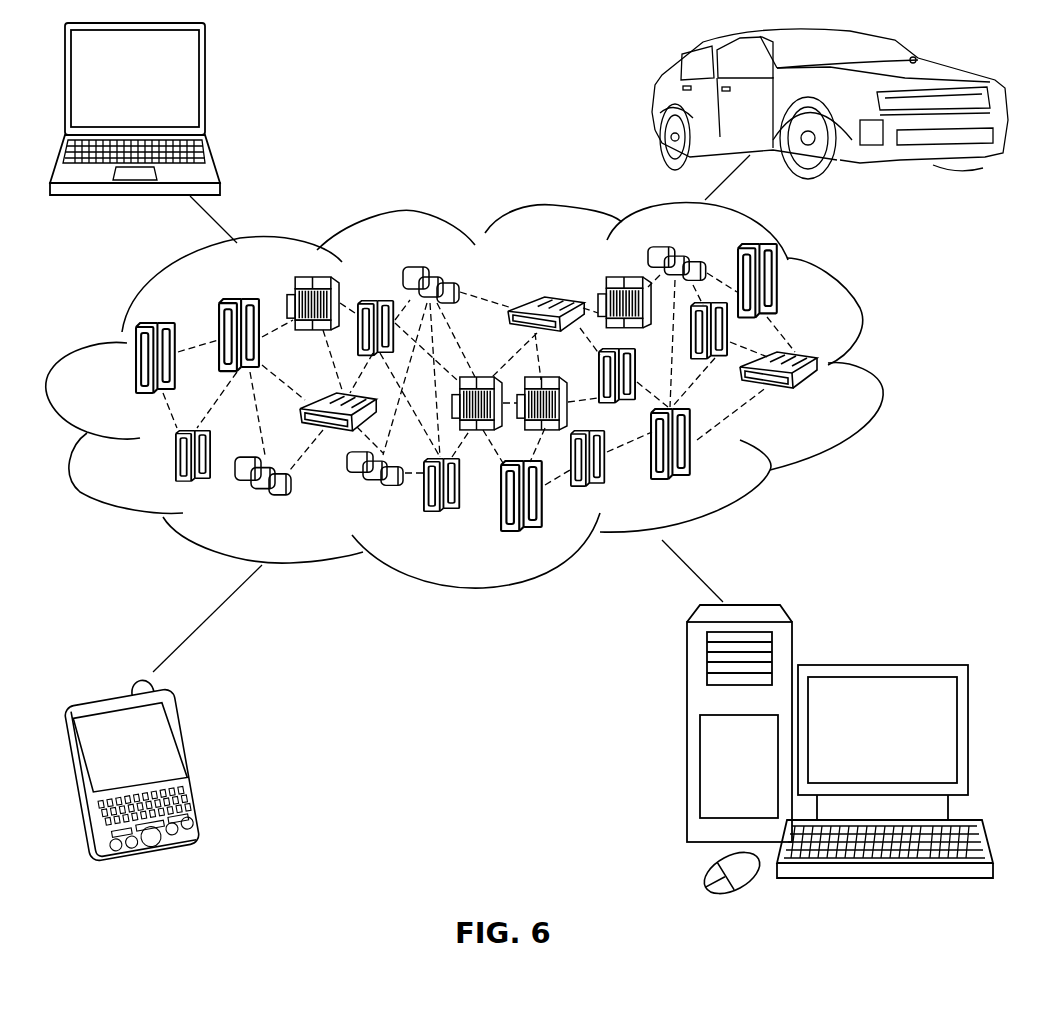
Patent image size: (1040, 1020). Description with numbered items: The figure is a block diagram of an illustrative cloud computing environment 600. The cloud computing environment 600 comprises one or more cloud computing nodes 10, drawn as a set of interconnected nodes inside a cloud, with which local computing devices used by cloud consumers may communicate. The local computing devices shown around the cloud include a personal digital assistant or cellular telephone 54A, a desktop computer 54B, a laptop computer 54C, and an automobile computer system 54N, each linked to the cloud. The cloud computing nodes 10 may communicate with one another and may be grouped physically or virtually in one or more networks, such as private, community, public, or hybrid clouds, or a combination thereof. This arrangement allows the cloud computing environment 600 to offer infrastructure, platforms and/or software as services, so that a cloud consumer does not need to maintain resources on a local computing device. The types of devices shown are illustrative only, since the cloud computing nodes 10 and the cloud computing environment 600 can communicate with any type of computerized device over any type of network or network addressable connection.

The personal digital assistant (PDA) or cellular telephone 54A is at (195, 762).
The desktop computer 54B is at (880, 663).
The laptop computer 54C is at (205, 88).
The automobile computer system 54N is at (655, 103).
The cloud computing environment 600 is at (502, 395).
The cloud computing node 10 is at (820, 398).